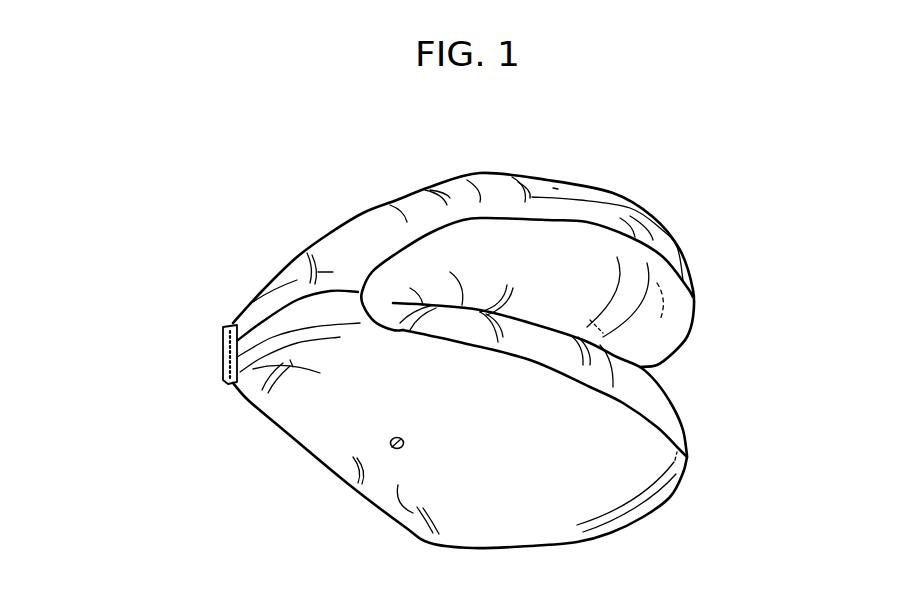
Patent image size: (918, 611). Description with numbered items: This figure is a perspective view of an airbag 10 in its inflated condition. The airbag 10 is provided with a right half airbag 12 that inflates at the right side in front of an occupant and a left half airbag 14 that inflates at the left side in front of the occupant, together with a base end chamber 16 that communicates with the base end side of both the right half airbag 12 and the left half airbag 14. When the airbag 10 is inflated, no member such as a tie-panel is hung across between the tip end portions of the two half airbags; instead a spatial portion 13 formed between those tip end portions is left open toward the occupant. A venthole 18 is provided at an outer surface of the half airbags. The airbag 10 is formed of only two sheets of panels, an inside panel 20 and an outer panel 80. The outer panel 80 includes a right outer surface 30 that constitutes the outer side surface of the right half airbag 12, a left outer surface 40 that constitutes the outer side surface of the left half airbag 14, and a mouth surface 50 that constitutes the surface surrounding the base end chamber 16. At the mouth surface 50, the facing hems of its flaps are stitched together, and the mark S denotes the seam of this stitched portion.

The airbag 10 is at (533, 162).
The right half airbag 12 is at (590, 203).
The spatial portion 13 is at (652, 373).
The left half airbag 14 is at (563, 523).
The base end chamber 16 is at (290, 398).
The venthole 18 is at (405, 444).
The inside panel 20 is at (663, 408).
The right outer surface 30 is at (427, 192).
The left outer surface 40 is at (497, 512).
The mouth surface 50 is at (293, 257).
The outer panel 80 is at (413, 513).
The seam S is at (229, 325).